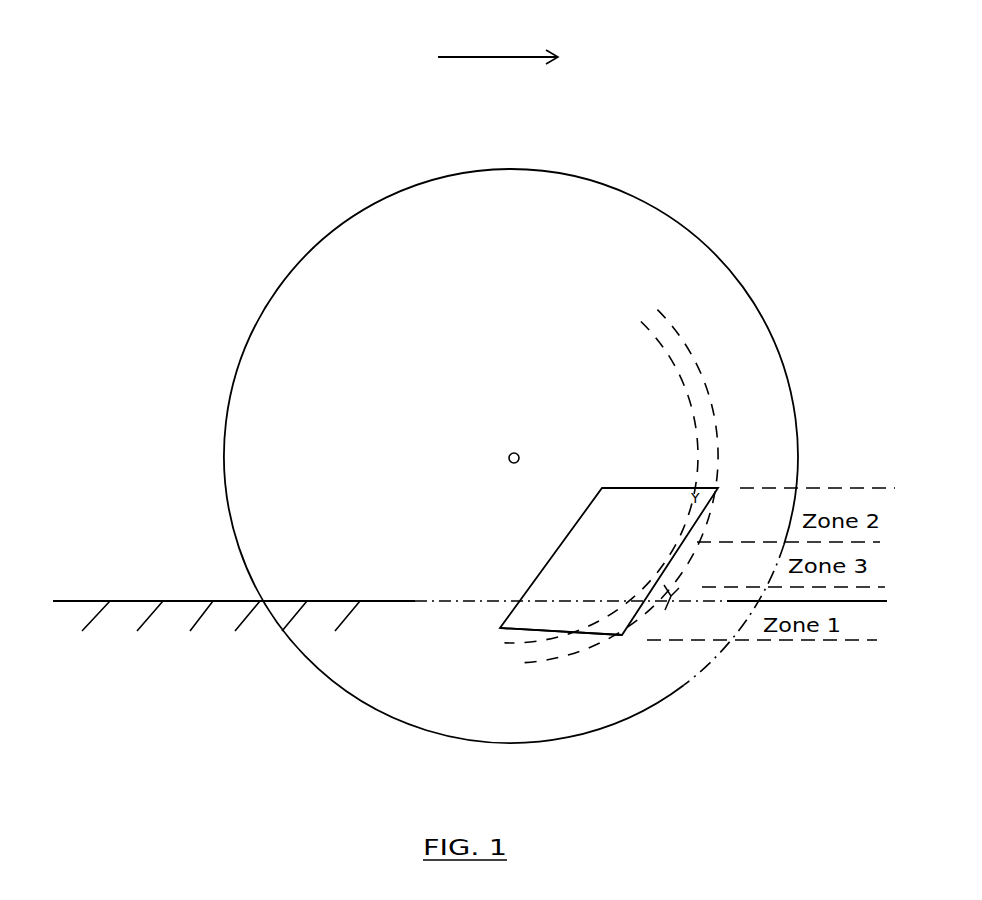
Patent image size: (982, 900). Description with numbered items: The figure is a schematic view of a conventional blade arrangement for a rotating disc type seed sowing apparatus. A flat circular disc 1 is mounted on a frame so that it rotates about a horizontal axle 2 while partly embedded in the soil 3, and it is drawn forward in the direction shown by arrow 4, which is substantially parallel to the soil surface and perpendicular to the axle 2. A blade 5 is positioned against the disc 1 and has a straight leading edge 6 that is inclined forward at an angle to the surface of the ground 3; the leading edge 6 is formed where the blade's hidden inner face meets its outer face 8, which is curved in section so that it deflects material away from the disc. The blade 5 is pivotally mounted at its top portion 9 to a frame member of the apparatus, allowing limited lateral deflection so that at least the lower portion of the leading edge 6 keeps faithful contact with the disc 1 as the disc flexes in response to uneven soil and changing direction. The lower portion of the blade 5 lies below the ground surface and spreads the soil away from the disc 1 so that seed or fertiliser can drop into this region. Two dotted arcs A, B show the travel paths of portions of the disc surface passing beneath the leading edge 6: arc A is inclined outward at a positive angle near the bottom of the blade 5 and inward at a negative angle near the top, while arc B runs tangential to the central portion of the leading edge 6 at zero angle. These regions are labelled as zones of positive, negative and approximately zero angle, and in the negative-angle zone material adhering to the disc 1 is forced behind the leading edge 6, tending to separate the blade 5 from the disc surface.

The flat circular disc 1 is at (326, 263).
The horizontal axle 2 is at (510, 458).
The soil 3 is at (470, 643).
The arrow 4 is at (498, 44).
The blade 5 is at (548, 560).
The leading edge 6 is at (623, 634).
The outer face 8 is at (649, 524).
The top portion 9 is at (636, 488).
The arc of travel A is at (618, 469).
The arc of travel B is at (626, 312).